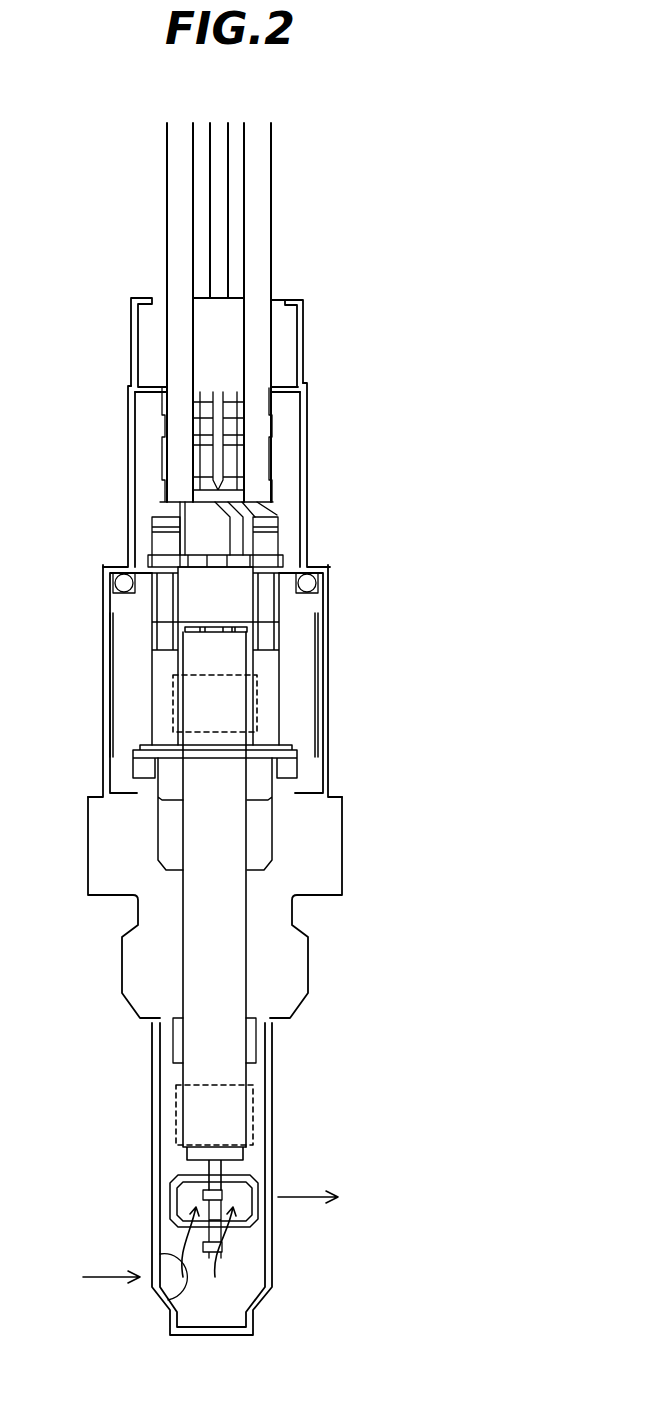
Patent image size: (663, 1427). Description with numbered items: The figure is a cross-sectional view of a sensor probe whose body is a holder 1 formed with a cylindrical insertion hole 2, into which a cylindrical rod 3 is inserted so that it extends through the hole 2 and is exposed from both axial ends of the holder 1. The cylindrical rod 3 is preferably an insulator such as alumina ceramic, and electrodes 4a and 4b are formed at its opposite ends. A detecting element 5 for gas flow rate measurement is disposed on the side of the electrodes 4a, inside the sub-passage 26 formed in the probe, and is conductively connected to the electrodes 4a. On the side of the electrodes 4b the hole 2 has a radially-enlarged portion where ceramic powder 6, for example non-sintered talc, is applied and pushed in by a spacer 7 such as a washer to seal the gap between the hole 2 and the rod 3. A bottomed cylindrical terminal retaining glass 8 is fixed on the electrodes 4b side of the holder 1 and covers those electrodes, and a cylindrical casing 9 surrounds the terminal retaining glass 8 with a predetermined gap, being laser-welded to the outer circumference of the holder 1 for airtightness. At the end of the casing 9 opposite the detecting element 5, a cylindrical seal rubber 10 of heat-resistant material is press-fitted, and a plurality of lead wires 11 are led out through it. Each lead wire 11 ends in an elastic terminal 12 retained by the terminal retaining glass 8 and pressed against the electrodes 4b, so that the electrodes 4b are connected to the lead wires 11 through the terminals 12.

The holder 1 is at (310, 858).
The insertion hole 2 is at (247, 960).
The cylindrical rod 3 is at (205, 962).
The electrodes 4a is at (252, 1118).
The electrodes 4b is at (220, 673).
The detecting element 5 is at (223, 1248).
The ceramic powder 6 is at (158, 837).
The spacer 7 is at (170, 783).
The terminal retaining glass 8 is at (128, 673).
The casing 9 is at (307, 490).
The seal rubber 10 is at (150, 350).
The lead wires 11 is at (260, 236).
The terminal 12 is at (167, 603).
The sub-passage 26 is at (168, 1160).